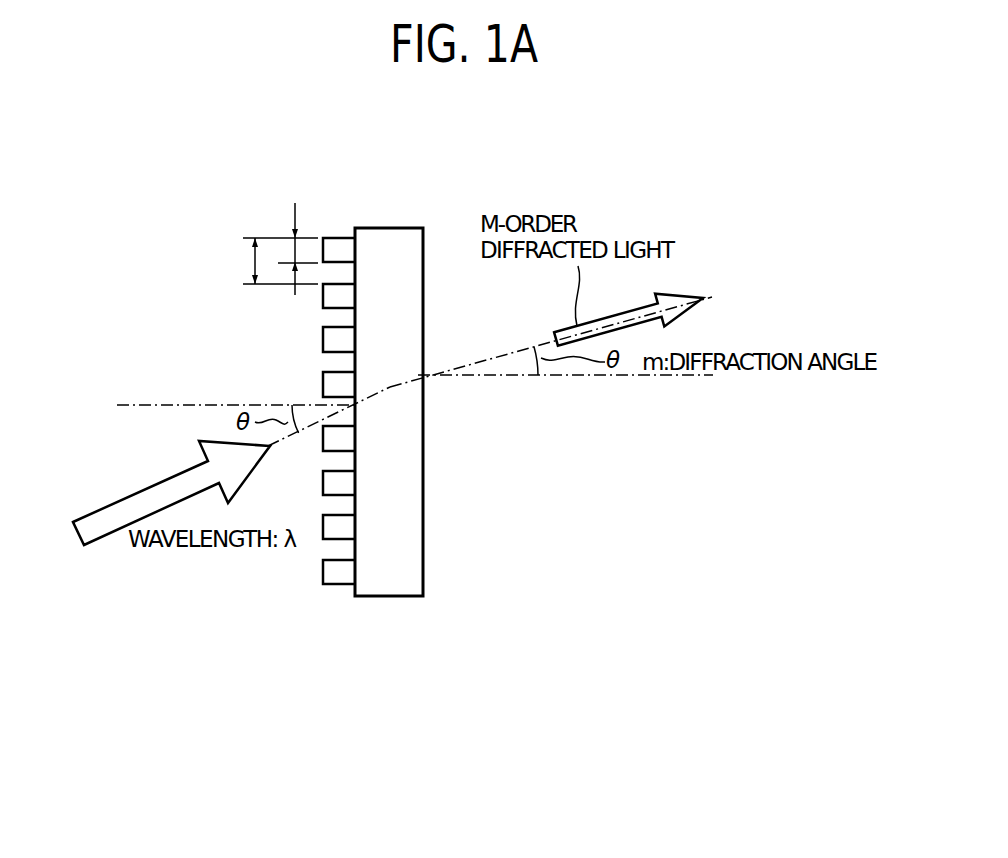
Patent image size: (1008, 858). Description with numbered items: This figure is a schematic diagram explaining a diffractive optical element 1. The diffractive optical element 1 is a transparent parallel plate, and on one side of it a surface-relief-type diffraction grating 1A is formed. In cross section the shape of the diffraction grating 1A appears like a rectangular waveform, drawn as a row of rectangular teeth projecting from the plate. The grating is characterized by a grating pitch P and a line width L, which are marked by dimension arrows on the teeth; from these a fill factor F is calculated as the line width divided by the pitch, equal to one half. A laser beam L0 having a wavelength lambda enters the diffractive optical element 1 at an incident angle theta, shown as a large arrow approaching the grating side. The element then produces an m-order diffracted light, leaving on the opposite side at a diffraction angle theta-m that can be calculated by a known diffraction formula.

The diffractive optical element 1 is at (429, 207).
The diffraction grating 1A is at (336, 600).
The grating pitch P is at (276, 261).
The line width L is at (298, 249).
The laser beam L0 is at (98, 525).